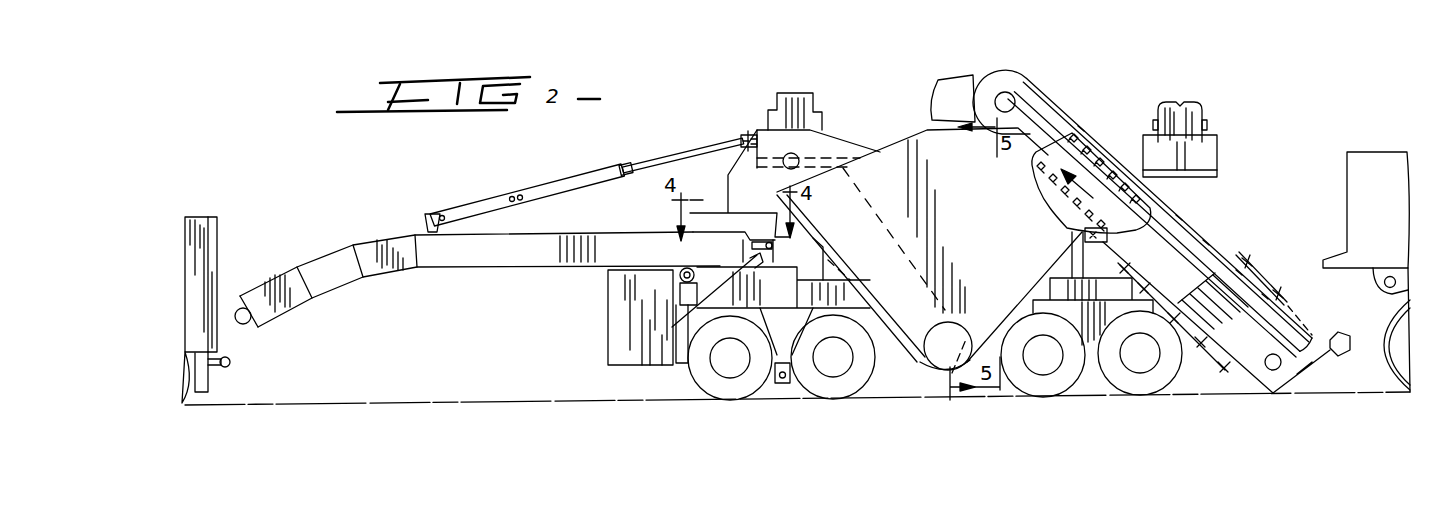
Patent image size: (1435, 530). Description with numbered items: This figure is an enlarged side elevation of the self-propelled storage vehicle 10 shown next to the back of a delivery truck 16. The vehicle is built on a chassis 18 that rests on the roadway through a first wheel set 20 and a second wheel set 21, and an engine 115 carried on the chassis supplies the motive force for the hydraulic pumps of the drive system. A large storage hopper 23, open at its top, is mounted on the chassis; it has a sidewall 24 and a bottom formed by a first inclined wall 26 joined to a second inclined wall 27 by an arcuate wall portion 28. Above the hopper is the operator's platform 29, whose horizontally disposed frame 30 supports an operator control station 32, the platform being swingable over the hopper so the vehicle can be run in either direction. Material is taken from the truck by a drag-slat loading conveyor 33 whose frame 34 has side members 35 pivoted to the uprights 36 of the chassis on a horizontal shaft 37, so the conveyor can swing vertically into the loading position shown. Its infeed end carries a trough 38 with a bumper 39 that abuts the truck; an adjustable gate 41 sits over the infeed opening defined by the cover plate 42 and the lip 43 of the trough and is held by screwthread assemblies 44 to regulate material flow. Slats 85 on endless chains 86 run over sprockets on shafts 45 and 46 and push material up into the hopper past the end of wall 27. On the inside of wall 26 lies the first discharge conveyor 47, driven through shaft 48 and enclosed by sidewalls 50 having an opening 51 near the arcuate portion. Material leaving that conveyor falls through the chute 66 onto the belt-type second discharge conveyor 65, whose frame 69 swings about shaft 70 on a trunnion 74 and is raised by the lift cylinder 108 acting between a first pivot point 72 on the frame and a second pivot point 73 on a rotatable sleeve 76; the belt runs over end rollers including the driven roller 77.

The self-propelled storage vehicle 10 is at (722, 118).
The delivery truck 16 is at (1380, 153).
The chassis 18 is at (686, 290).
The first wheel set 20 is at (781, 392).
The second wheel set 21 is at (1107, 397).
The storage hopper 23 is at (908, 130).
The sidewall 24 is at (890, 155).
The first inclined wall 26 is at (884, 333).
The second inclined wall 27 is at (1003, 327).
The arcuate wall portion 28 is at (937, 372).
The operator's platform 29 is at (1224, 145).
The horizontally disposed frame 30 is at (1213, 178).
The operator control station 32 is at (1185, 110).
The loading conveyor 33 is at (1293, 394).
The conveyor frame 34 is at (1024, 73).
The side member 35 is at (1230, 330).
The upright 36 is at (1082, 265).
The horizontal shaft 37 is at (1100, 230).
The trough 38 is at (1312, 360).
The bumper 39 is at (1350, 342).
The adjustable gate 41 is at (1310, 310).
The conveyor frame cover plate 42 is at (1213, 247).
The lip 43 is at (1338, 338).
The adjustable screwthread assembly 44 is at (1275, 265).
The shaft 45 is at (1005, 96).
The shaft 46 is at (1273, 370).
The first discharge conveyor 47 is at (840, 155).
The shaft 48 is at (791, 153).
The sidewall 50 is at (806, 122).
The opening 51 is at (952, 416).
The second discharge conveyor 65 is at (437, 210).
The chute 66 is at (737, 203).
The frame 69 is at (464, 262).
The shaft 70 is at (706, 299).
The first pivot point 72 is at (430, 215).
The second pivot point 73 is at (746, 138).
The trunnion 74 is at (757, 264).
The rotatable sleeve 76 is at (757, 138).
The end roller 77 is at (248, 322).
The slats 85 is at (1068, 153).
The endless chains 86 is at (1095, 165).
The lift cylinder 108 is at (626, 165).
The engine 115 is at (618, 345).